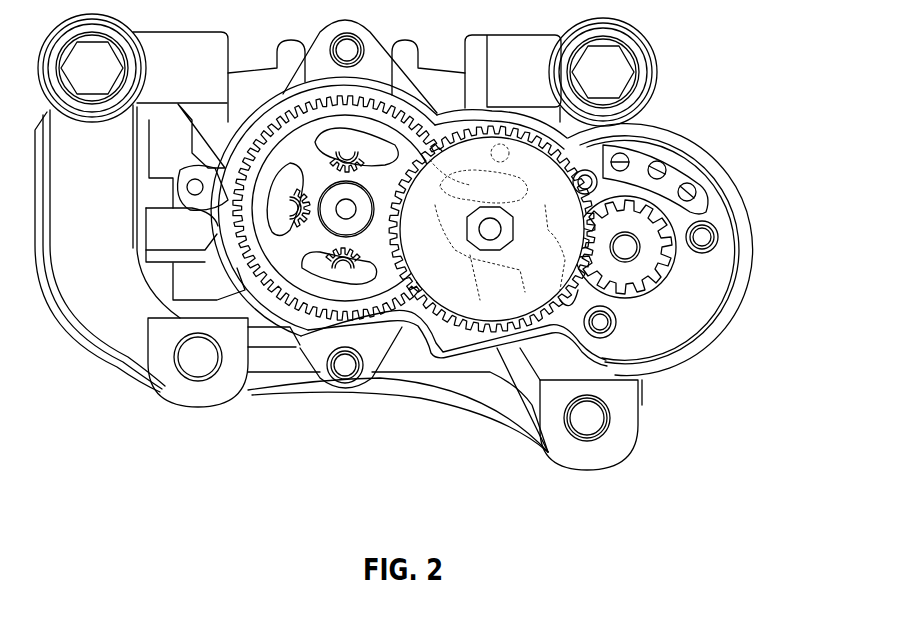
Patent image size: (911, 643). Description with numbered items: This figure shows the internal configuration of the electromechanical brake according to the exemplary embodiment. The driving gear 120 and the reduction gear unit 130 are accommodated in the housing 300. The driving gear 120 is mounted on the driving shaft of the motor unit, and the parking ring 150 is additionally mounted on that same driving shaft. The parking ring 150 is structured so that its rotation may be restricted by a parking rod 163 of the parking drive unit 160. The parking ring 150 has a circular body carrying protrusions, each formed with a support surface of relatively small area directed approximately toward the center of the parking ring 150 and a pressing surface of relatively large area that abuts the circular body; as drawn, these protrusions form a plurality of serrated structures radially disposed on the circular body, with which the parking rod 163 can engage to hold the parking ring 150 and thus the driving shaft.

The housing 300 is at (667, 137).
The driving gear 120 is at (632, 215).
The parking ring 150 is at (660, 227).
The reduction gear unit 130 is at (553, 326).
The parking drive unit 160 is at (460, 338).
The parking rod 163 is at (573, 290).